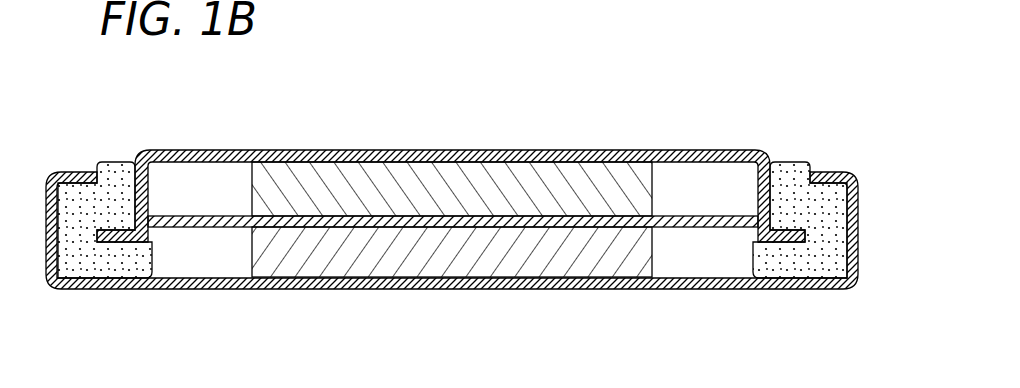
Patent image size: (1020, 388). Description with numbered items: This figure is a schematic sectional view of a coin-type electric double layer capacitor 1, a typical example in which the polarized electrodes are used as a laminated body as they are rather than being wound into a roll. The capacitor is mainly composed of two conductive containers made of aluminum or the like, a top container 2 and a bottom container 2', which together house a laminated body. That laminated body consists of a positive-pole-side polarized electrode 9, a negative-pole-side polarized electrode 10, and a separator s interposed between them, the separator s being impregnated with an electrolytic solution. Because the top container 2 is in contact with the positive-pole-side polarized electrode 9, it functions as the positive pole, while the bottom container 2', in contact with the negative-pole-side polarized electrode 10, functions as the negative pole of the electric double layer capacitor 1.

The electric double layer capacitor 1 is at (545, 121).
The top container 2 is at (451, 168).
The bottom container 2' is at (452, 259).
The positive-pole-side polarized electrode 9 is at (460, 190).
The negative-pole-side polarized electrode 10 is at (468, 250).
The separator s is at (695, 217).